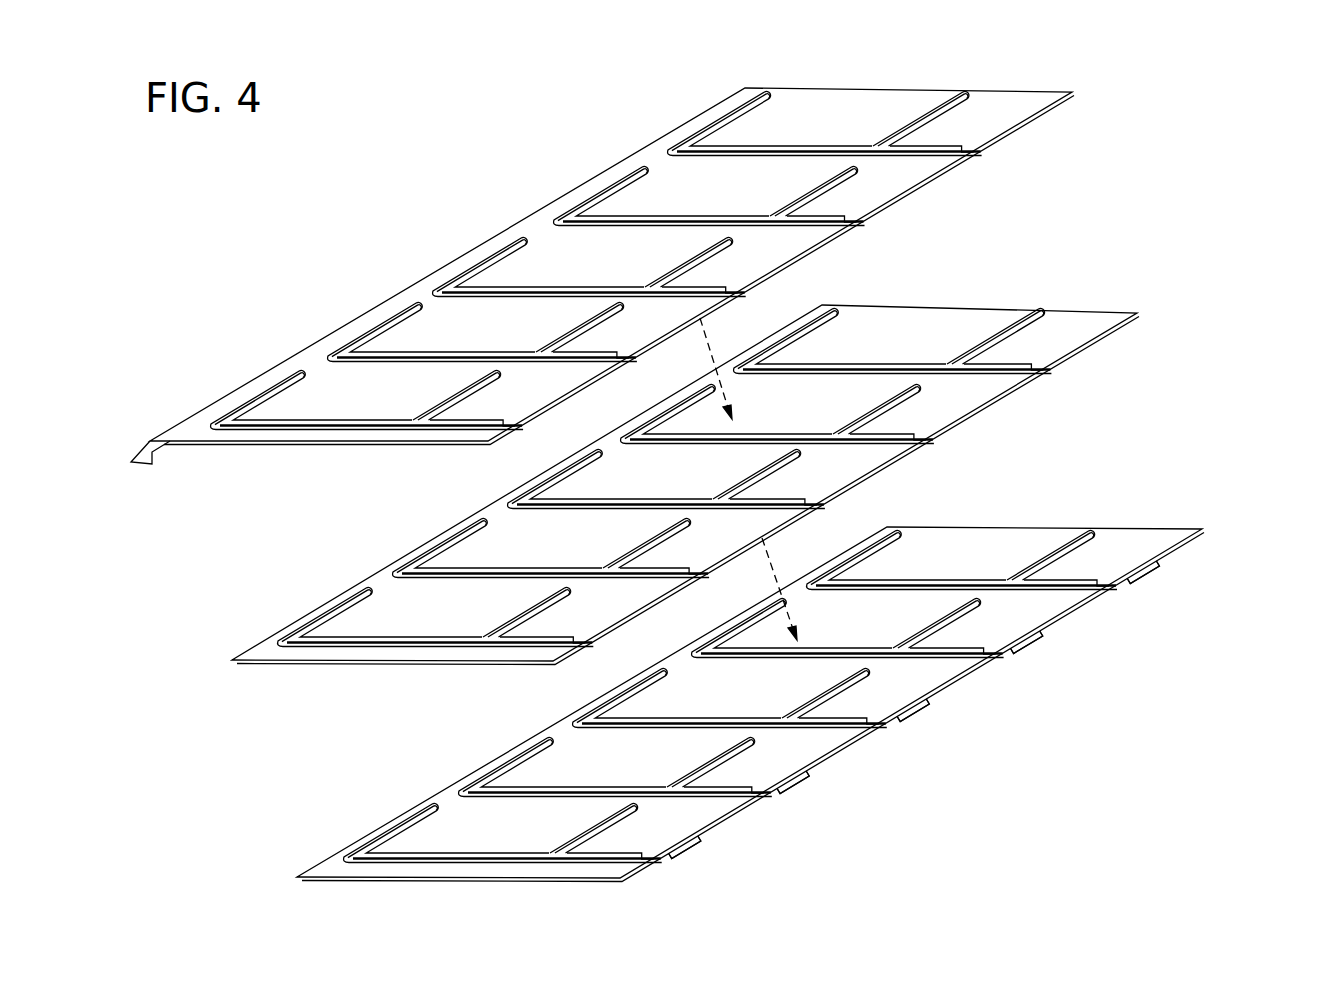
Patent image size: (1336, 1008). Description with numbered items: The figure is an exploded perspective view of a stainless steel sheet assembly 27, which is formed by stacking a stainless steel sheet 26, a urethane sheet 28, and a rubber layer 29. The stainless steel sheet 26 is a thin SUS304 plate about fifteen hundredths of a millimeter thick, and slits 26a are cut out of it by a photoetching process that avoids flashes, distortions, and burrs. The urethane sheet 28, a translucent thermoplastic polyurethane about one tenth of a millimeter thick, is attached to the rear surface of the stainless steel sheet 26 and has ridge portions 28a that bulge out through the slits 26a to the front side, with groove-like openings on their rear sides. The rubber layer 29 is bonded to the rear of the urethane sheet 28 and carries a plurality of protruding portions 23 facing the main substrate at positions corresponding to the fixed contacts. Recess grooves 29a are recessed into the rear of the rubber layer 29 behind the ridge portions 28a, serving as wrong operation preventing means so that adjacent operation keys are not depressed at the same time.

The protruding portions 23 is at (1146, 575).
The stainless steel sheet 26 is at (1012, 100).
The slits 26a is at (697, 124).
The stainless steel sheet assembly 27 is at (1193, 242).
The urethane sheet 28 is at (1078, 322).
The ridge portions 28a is at (978, 330).
The rubber layer 29 is at (1135, 542).
The recess grooves 29a is at (871, 728).